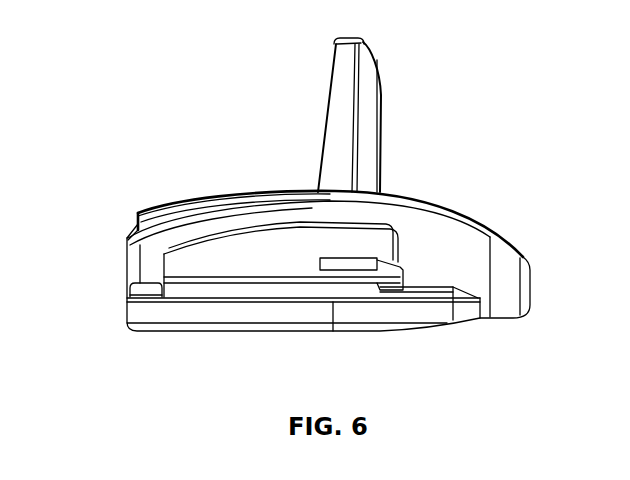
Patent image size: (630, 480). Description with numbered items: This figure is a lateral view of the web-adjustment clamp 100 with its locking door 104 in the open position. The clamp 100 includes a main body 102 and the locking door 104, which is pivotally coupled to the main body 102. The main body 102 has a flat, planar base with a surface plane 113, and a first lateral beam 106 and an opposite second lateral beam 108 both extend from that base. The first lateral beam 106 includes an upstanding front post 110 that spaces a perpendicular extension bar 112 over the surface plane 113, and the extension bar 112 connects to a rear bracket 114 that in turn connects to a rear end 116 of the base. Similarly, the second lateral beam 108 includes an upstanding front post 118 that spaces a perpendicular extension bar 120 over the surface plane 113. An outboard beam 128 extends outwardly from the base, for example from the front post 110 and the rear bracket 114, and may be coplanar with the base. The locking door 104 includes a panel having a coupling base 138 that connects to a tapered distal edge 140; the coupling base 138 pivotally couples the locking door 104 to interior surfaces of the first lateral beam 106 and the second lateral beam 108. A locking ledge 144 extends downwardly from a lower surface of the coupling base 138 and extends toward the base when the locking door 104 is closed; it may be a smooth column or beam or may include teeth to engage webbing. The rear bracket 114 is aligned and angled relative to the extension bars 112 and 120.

The web-adjustment clamp 100 is at (192, 52).
The main body 102 is at (433, 330).
The locking door 104 is at (382, 102).
The first lateral beam 106 is at (200, 212).
The second lateral beam 108 is at (219, 213).
The front post 110 is at (127, 273).
The extension bar 112 is at (185, 205).
The surface plane 113 is at (220, 284).
The rear bracket 114 is at (463, 262).
The rear end 116 is at (527, 295).
The front post 118 is at (137, 222).
The extension bar 120 is at (273, 192).
The outboard beam 128 is at (236, 318).
The coupling base 138 is at (370, 188).
The tapered distal edge 140 is at (351, 37).
The locking ledge 144 is at (325, 259).